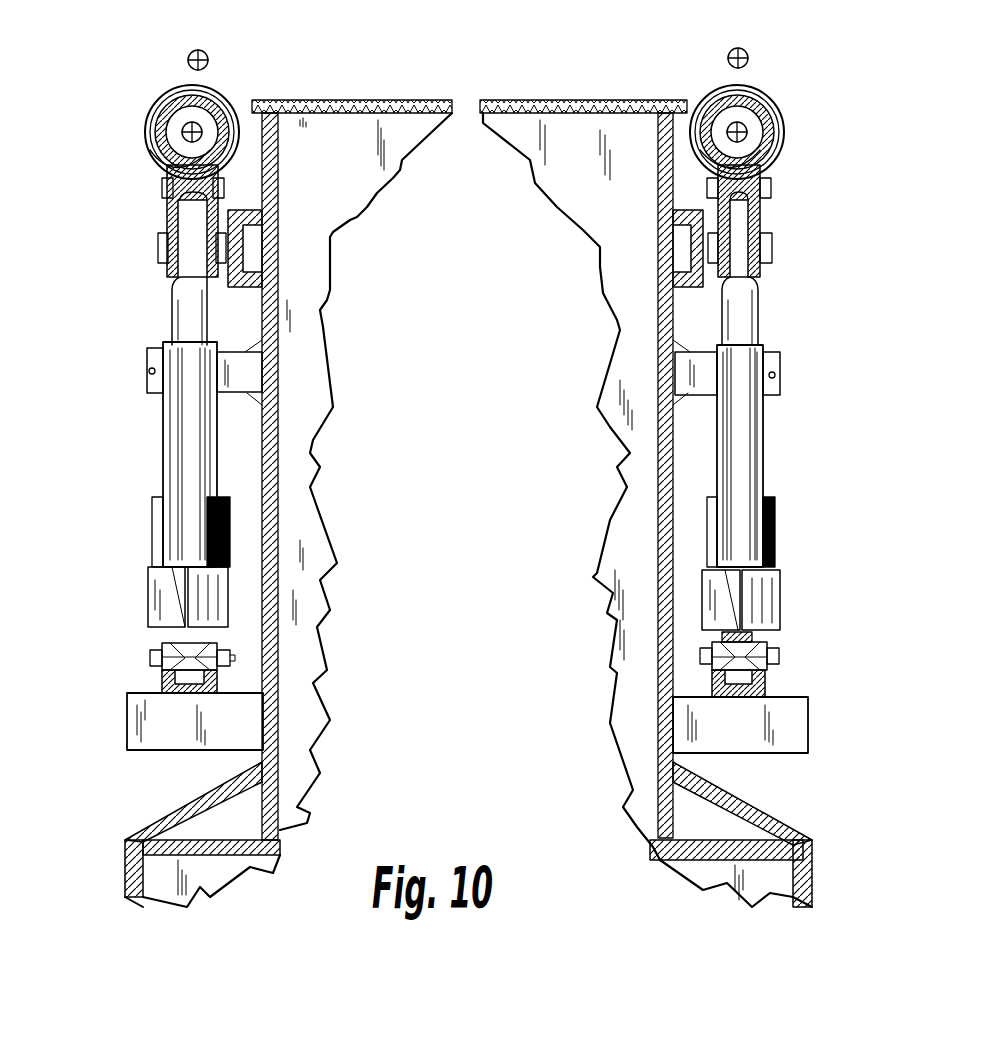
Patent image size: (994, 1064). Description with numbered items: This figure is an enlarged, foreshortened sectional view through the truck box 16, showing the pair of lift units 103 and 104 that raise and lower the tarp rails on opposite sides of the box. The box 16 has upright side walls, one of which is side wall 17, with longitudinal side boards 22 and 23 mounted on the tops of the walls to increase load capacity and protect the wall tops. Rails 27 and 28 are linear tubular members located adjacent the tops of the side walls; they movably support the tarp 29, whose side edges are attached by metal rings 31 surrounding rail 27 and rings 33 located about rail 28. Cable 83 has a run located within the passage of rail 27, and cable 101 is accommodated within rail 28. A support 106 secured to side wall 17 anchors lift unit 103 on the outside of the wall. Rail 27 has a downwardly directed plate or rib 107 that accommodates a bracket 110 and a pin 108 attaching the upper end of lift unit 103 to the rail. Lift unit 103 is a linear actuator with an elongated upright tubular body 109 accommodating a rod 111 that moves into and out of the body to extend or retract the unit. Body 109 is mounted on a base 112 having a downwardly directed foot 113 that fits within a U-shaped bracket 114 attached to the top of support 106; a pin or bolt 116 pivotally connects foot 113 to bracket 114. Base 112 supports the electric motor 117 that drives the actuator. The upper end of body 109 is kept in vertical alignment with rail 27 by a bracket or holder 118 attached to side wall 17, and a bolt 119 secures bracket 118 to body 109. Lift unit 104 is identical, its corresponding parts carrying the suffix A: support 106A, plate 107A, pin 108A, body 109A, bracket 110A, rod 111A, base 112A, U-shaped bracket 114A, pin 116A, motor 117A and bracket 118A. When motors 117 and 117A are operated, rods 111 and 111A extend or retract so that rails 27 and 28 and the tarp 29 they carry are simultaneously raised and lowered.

The box 16 is at (825, 860).
The side wall 17 is at (657, 447).
The side board 22 is at (690, 263).
The side board 23 is at (270, 143).
The rail 27 is at (763, 98).
The rail 28 is at (168, 102).
The tarp 29 is at (521, 103).
The ring 31 is at (712, 90).
The ring 33 is at (192, 95).
The cable 83 is at (738, 47).
The cable 101 is at (200, 49).
The lift unit 103 is at (787, 412).
The lift unit 104 is at (150, 431).
The support 106 is at (790, 717).
The support 106A is at (178, 738).
The plate 107 is at (757, 178).
The plate 107A is at (210, 250).
The pin 108 is at (778, 241).
The pin 108A is at (158, 243).
The tubular body 109 is at (790, 453).
The tubular body 109A is at (205, 188).
The bracket 110 is at (757, 217).
The bracket 110A is at (170, 272).
The rod 111 is at (737, 312).
The rod 111A is at (185, 320).
The base 112 is at (760, 583).
The base 112A is at (187, 600).
The foot 113 is at (765, 643).
The U-shaped bracket 114 is at (770, 683).
The U-shaped bracket 114A is at (170, 688).
The pin 116 is at (770, 657).
The pin 116A is at (150, 657).
The motor 117 is at (777, 517).
The motor 117A is at (228, 503).
The bracket 118 is at (778, 390).
The bracket 118A is at (233, 362).
The bolt 119 is at (777, 363).